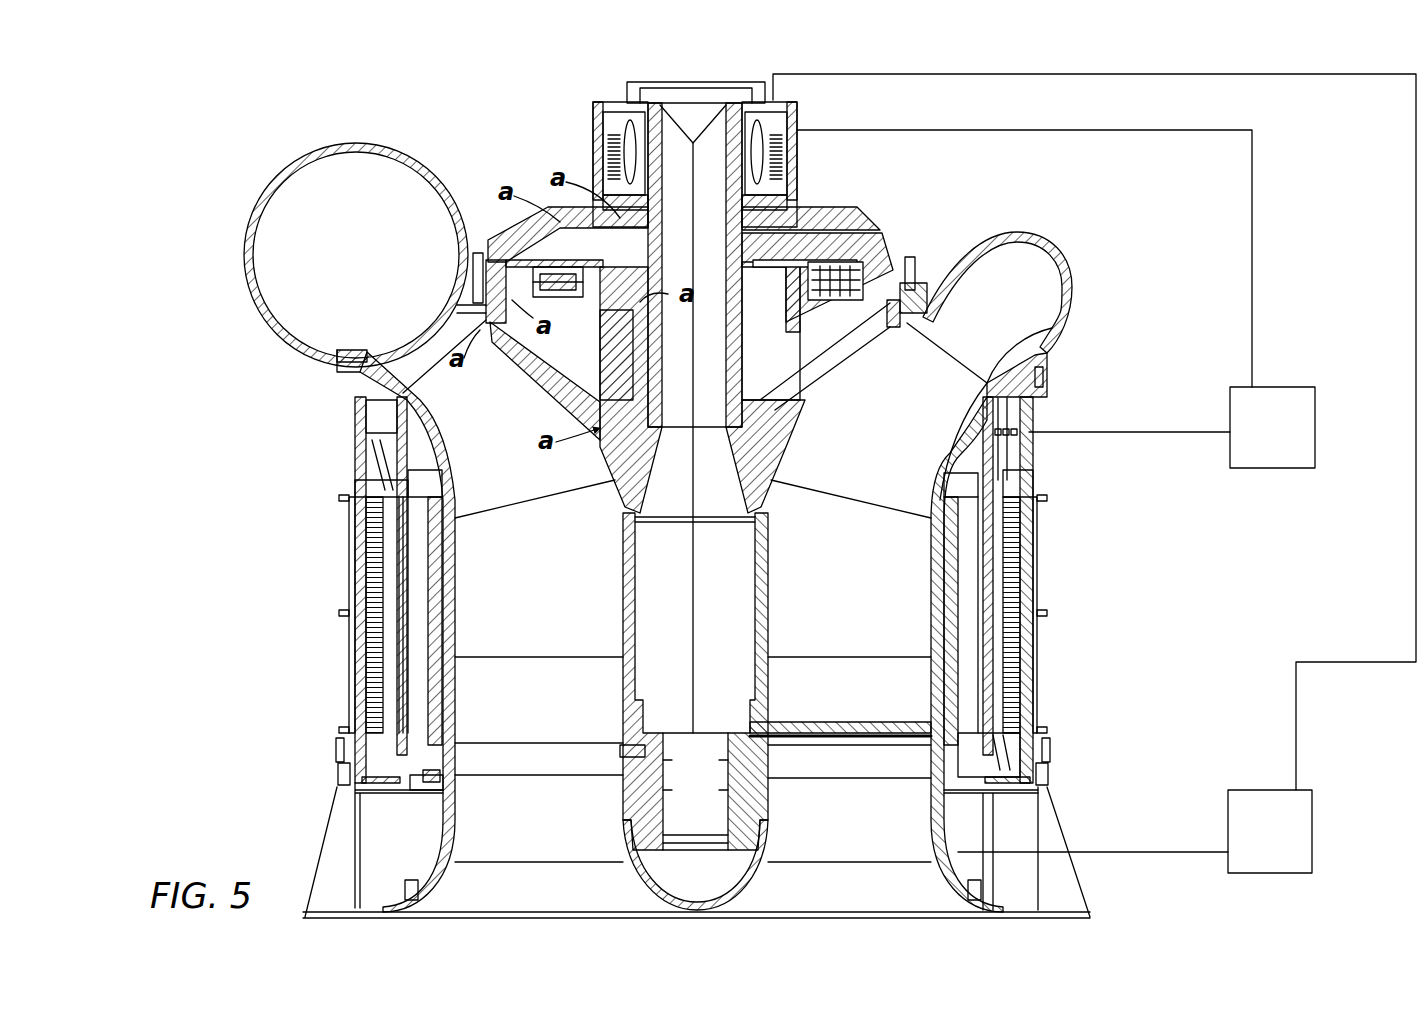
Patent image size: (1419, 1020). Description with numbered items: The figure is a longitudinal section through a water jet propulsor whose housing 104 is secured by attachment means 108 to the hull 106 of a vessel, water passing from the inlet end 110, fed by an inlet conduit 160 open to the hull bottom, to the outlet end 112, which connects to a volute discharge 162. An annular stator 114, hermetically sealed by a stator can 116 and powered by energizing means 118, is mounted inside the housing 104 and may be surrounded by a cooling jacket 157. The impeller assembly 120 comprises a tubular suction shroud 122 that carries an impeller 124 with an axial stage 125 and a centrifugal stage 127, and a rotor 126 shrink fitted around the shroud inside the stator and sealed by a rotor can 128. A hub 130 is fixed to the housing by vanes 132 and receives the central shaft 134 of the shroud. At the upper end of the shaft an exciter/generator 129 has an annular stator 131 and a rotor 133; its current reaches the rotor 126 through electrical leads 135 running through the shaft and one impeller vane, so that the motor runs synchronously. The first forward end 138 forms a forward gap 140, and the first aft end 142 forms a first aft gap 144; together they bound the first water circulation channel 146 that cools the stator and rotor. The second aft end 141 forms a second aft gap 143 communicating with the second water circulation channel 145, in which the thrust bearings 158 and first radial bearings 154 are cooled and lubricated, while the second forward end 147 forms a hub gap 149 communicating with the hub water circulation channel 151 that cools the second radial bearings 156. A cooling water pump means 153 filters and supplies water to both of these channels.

The housing 104 is at (1030, 433).
The hull 106 is at (1080, 908).
The attachment means 108 is at (912, 260).
The inlet end 110 is at (950, 882).
The outlet end 112 is at (903, 325).
The annular stator 114 is at (1015, 578).
The stator can 116 is at (990, 530).
The energizing means 118 is at (1300, 468).
The impeller assembly 120 is at (443, 592).
The tubular suction shroud 122 is at (435, 640).
The impeller 124 is at (580, 495).
The axial stage 125 is at (845, 670).
The rotor 126 is at (950, 603).
The centrifugal stage 127 is at (868, 500).
The rotor can 128 is at (988, 655).
The exciter/generator 129 is at (790, 120).
The hub 130 is at (760, 875).
The annular stator 131 is at (792, 152).
The vanes 132 is at (530, 850).
The rotor 133 is at (598, 162).
The central shaft 134 is at (748, 380).
The electrical leads 135 is at (697, 633).
The first forward end 138 is at (930, 750).
The forward gap 140 is at (930, 788).
The second aft end 141 is at (890, 335).
The first aft end 142 is at (965, 412).
The second aft gap 143 is at (480, 318).
The first aft gap 144 is at (990, 395).
The second water circulation channel 145 is at (512, 330).
The first water circulation channel 146 is at (962, 448).
The second forward end 147 is at (628, 728).
The hub gap 149 is at (620, 762).
The hub water circulation channel 151 is at (660, 865).
The cooling water pump means 153 is at (1300, 812).
The first radial bearings 154 is at (630, 355).
The second radial bearings 156 is at (762, 805).
The cooling jacket 157 is at (1038, 596).
The thrust bearings 158 is at (850, 272).
The inlet conduit 160 is at (445, 862).
The volute discharge 162 is at (298, 190).